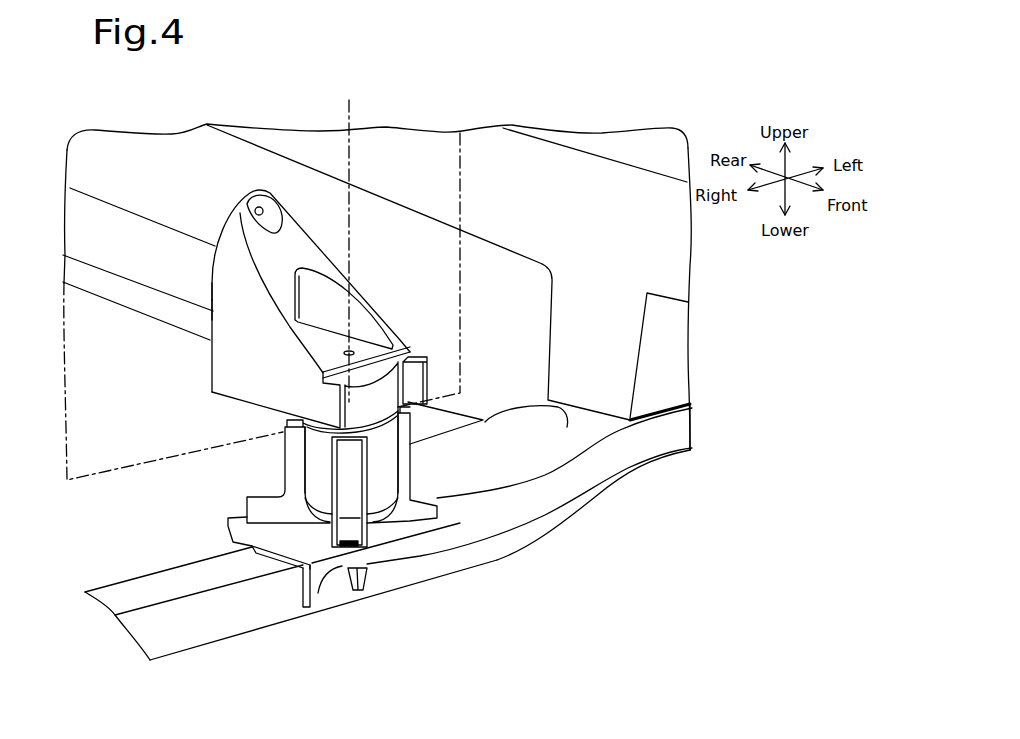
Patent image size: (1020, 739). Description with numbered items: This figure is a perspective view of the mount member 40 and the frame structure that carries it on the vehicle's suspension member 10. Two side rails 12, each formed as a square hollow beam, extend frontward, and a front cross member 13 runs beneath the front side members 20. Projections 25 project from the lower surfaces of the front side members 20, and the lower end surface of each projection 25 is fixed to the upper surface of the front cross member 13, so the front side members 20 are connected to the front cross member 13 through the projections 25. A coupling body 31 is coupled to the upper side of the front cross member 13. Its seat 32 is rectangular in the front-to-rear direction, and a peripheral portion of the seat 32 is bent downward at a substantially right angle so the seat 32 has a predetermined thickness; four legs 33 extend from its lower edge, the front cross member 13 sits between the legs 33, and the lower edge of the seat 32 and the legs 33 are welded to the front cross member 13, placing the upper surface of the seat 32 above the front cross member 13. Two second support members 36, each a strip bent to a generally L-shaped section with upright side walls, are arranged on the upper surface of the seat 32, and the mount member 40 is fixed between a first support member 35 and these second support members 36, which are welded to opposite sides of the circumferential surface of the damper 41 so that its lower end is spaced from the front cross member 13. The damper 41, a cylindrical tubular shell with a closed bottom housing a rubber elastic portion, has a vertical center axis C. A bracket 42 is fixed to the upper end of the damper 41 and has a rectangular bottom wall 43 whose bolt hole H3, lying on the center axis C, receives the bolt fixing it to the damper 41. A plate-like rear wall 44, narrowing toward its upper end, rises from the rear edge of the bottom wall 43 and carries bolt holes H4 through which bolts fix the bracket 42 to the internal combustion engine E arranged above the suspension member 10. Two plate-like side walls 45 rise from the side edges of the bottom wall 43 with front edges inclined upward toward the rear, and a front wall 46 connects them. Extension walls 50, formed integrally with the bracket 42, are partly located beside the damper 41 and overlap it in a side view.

The suspension member 10 is at (80, 572).
The side rail 12 is at (122, 218).
The front cross member 13 is at (521, 560).
The front side member 20 is at (487, 168).
The projection 25 is at (645, 341).
The coupling body 31 is at (309, 630).
The seat 32 is at (278, 548).
The leg 33 is at (335, 619).
The first support member 35 is at (425, 527).
The second support member 36 is at (250, 511).
The mount member 40 is at (286, 355).
The damper 41 is at (385, 473).
The bracket 42 is at (367, 247).
The bottom wall 43 is at (325, 337).
The rear wall 44 is at (214, 256).
The side wall 45 is at (227, 290).
The front wall 46 is at (273, 266).
The extension wall 50 is at (427, 357).
The bolt hole H3 is at (357, 352).
The bolt hole H4 is at (245, 203).
The center axis C is at (351, 240).
The internal combustion engine E is at (128, 466).